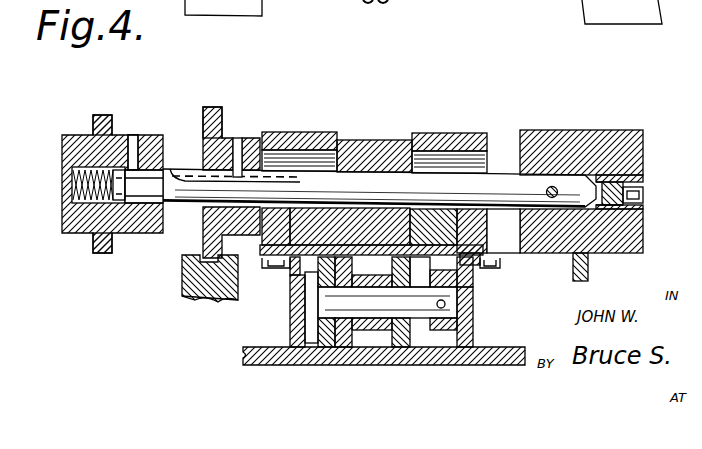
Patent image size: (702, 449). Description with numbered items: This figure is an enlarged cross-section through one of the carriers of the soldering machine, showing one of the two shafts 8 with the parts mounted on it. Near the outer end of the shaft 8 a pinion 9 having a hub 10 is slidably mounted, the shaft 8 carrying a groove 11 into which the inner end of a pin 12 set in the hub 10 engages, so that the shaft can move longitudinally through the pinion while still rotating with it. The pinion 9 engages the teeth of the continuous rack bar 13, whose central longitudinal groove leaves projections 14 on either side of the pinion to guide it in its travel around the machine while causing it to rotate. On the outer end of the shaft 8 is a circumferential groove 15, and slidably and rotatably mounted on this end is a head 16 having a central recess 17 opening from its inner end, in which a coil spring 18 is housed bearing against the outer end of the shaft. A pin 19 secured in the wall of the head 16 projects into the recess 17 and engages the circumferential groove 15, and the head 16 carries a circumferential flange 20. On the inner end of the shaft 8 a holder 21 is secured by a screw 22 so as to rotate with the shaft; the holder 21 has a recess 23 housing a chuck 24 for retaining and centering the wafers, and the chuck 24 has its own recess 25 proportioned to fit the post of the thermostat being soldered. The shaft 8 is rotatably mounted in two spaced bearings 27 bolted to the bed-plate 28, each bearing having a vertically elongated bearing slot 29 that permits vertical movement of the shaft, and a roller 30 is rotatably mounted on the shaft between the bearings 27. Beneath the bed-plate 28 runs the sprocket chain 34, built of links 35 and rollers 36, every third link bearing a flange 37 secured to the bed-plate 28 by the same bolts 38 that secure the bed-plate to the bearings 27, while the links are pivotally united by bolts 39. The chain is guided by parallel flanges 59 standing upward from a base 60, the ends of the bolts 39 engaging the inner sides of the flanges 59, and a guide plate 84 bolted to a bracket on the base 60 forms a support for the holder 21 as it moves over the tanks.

The shaft 8 is at (503, 190).
The pinion 9 is at (203, 122).
The hub 10 is at (230, 137).
The groove 11 is at (195, 174).
The pin 12 is at (240, 150).
The rack bar 13 is at (185, 290).
The projections 14 is at (185, 258).
The circumferential groove 15 is at (140, 210).
The head 16 is at (75, 146).
The central recess 17 is at (73, 184).
The coil spring 18 is at (112, 178).
The pin 19 is at (133, 152).
The circumferential flange 20 is at (97, 117).
The holder 21 is at (585, 140).
The screw 22 is at (552, 186).
The recess 23 is at (612, 182).
The chuck 24 is at (612, 206).
The recess 25 is at (645, 195).
The bearings 27 is at (300, 133).
The bed-plate 28 is at (484, 252).
The bearing slot 29 is at (320, 160).
The roller 30 is at (372, 145).
The sprocket chain 34 is at (386, 339).
The links 35 is at (338, 332).
The rollers 36 is at (366, 330).
The flange 37 is at (300, 270).
The bolts 38 is at (288, 268).
The bolts 39 is at (445, 310).
The parallel flanges 59 is at (292, 326).
The base 60 is at (272, 365).
The guide plates 84 is at (573, 268).